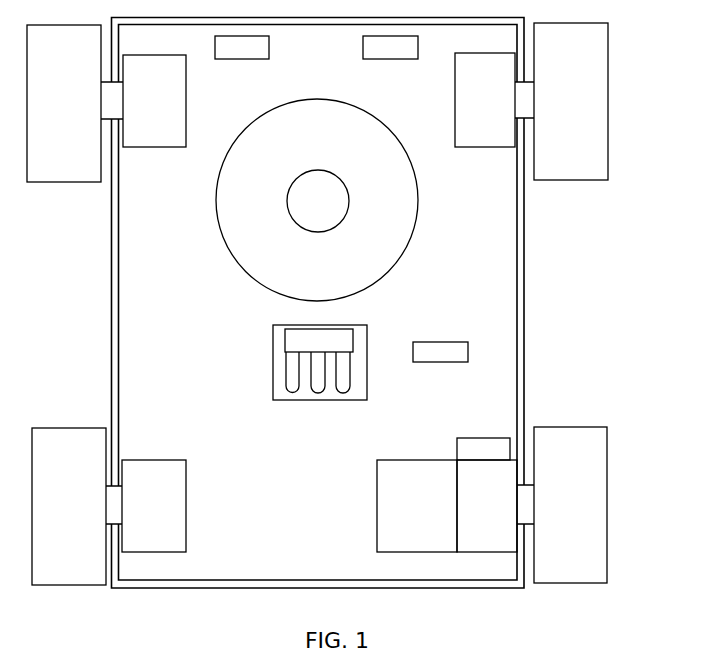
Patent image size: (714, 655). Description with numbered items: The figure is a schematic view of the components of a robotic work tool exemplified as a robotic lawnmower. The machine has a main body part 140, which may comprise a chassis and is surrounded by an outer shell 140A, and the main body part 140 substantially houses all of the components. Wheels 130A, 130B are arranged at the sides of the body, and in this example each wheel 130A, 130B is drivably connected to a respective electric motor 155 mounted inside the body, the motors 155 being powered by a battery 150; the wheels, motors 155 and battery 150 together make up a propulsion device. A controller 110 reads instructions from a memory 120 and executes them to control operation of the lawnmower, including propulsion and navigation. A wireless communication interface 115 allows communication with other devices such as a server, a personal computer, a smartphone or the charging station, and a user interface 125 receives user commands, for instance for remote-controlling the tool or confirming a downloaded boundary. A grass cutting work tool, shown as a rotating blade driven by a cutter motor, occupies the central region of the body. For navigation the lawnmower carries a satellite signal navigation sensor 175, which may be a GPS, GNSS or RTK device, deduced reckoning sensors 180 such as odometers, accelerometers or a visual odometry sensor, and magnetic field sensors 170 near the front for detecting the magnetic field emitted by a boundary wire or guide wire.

The controller 110 is at (290, 393).
The wireless communication interface 115 is at (343, 395).
The memory 120 is at (318, 395).
The user interface 125 is at (344, 362).
The wheel 130A is at (317, 102).
The wheel 130B is at (319, 506).
The main body part 140 is at (517, 326).
The outer shell 140A is at (524, 253).
The battery 150 is at (417, 506).
The electric motor 155 is at (319, 302).
The magnetic field sensor 170 is at (316, 47).
The satellite signal navigation sensor 175 is at (440, 352).
The deduced reckoning sensors 180 is at (483, 449).